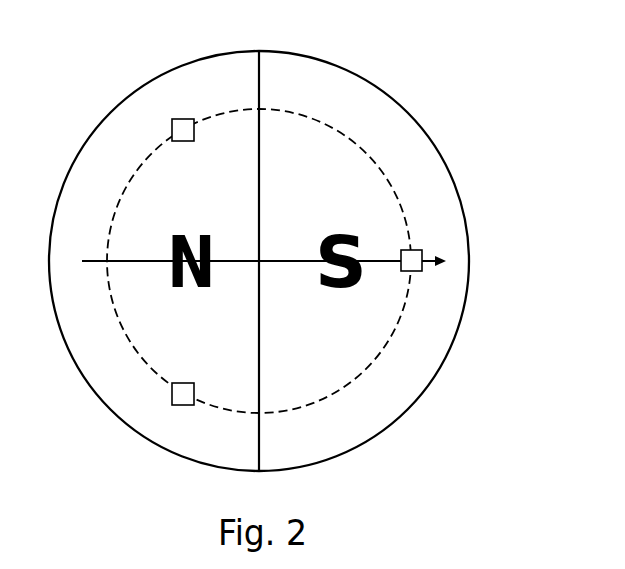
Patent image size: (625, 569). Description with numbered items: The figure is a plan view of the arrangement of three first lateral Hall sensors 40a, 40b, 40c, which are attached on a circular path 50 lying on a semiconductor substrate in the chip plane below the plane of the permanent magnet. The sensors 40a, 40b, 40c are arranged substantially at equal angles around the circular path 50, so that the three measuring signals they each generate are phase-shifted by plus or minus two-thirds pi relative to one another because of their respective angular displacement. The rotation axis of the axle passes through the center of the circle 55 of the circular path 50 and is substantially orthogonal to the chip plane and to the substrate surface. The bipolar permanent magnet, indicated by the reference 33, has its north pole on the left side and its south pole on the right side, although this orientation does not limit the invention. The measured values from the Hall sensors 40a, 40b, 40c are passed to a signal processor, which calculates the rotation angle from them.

The magnet 33 is at (407, 67).
The first lateral Hall sensor 40a is at (192, 129).
The first lateral Hall sensor 40b is at (419, 252).
The first lateral Hall sensor 40c is at (170, 395).
The circular path 50 is at (357, 144).
The center of the circle 55 is at (260, 261).